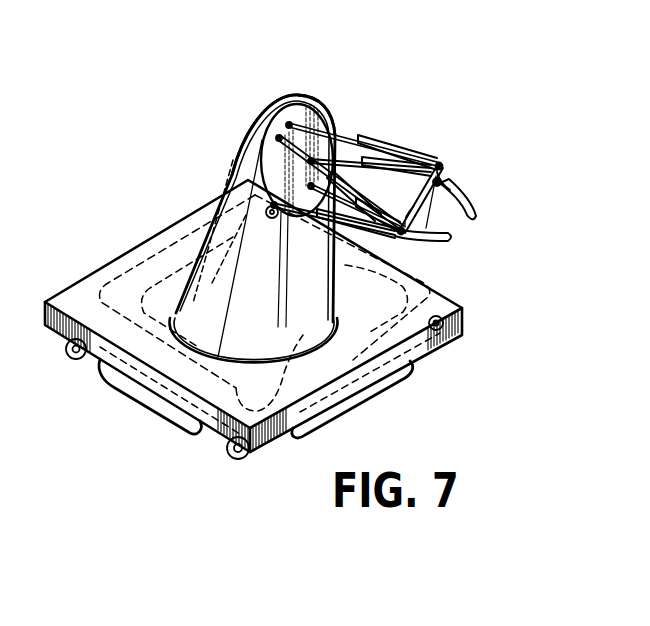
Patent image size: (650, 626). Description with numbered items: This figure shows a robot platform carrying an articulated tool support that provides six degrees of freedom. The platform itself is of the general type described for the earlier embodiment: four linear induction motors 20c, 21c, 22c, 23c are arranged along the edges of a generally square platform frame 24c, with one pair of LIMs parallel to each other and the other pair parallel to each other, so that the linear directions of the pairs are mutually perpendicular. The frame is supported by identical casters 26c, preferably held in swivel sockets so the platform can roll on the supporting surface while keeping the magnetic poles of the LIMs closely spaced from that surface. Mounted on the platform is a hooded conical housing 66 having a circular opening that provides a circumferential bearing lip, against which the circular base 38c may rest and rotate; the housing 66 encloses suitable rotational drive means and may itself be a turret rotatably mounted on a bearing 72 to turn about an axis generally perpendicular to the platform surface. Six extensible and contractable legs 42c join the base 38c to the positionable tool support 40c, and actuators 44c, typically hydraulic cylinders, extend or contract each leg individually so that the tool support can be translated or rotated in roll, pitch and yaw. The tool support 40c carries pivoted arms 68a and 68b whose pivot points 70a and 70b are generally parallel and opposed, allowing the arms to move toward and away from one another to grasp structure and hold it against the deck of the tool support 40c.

The linear induction motor 20c is at (375, 390).
The linear induction motor 21c is at (142, 262).
The linear induction motor 22c is at (422, 286).
The linear induction motor 23c is at (133, 381).
The platform frame 24c is at (162, 389).
The caster 26c is at (72, 356).
The base 38c is at (327, 116).
The tool support 40c is at (393, 240).
The extensible leg 42c is at (344, 158).
The actuator 44c is at (352, 207).
The hooded conical housing 66 is at (276, 330).
The pivoted arm 68a is at (441, 242).
The pivoted arm 68b is at (463, 212).
The pivot point 70a is at (428, 212).
The pivot point 70b is at (440, 181).
The bearing 72 is at (252, 362).